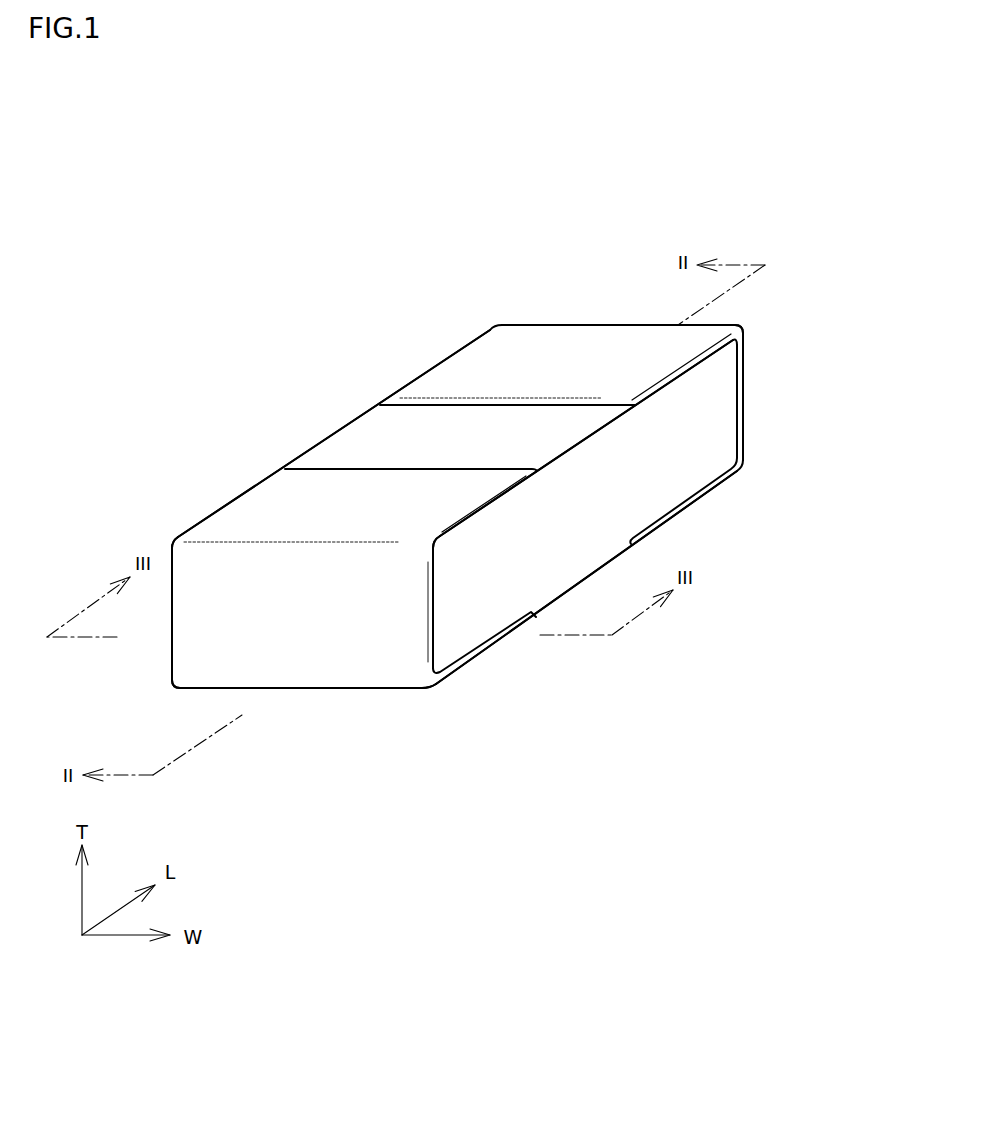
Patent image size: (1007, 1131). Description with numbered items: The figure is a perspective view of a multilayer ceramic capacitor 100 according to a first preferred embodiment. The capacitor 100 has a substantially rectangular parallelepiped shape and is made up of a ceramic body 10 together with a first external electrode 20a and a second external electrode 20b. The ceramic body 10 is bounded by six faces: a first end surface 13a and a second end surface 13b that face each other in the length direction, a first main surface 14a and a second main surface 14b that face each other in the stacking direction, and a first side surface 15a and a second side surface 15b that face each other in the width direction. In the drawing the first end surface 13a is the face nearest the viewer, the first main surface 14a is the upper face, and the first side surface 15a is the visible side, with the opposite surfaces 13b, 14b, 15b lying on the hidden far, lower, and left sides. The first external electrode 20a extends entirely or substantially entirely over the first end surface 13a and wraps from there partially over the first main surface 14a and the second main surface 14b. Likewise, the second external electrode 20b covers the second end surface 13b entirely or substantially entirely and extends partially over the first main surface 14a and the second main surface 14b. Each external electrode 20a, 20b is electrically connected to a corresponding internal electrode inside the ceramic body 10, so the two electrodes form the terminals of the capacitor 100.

The multilayer ceramic capacitor 100 is at (382, 322).
The ceramic body 10 is at (310, 448).
The first end surface 13a is at (312, 614).
The second end surface 13b is at (725, 409).
The first main surface 14a is at (378, 433).
The second main surface 14b is at (587, 553).
The first side surface 15a is at (612, 480).
The second side surface 15b is at (293, 461).
The first external electrode 20a is at (223, 522).
The second external electrode 20b is at (538, 327).